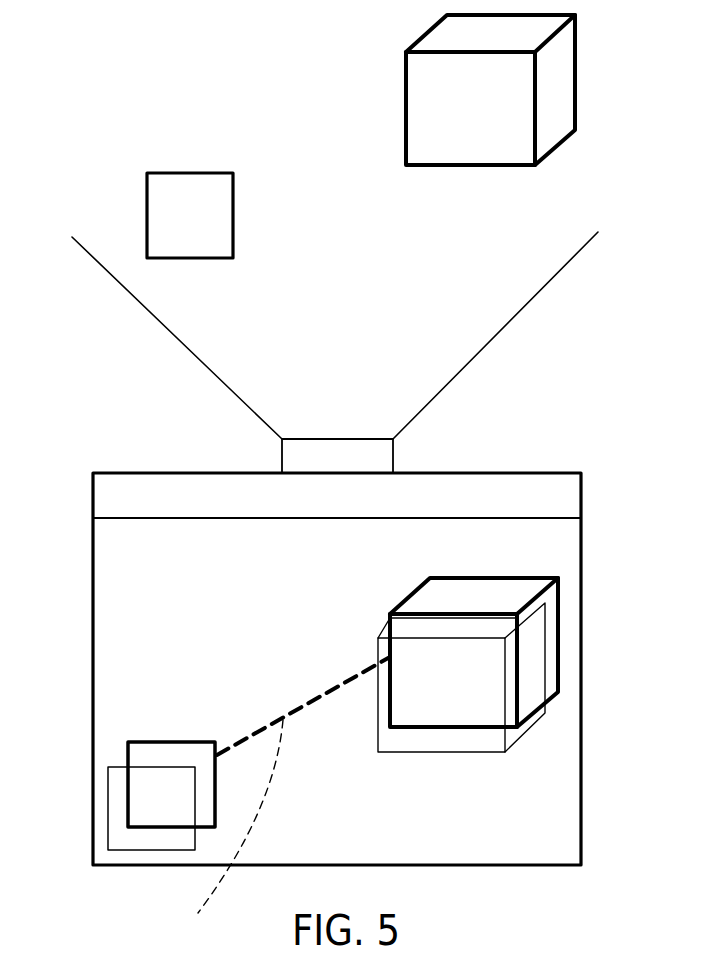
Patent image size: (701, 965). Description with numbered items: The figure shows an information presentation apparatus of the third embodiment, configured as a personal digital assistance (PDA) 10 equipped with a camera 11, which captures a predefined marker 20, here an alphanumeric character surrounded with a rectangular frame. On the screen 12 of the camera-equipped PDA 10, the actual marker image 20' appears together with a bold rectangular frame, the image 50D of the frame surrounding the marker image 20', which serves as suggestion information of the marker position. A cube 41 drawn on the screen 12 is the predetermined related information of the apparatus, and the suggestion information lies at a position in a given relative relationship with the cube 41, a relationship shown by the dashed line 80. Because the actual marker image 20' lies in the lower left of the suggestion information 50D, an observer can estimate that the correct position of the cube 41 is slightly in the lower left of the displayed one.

The personal digital assistance (PDA) 10 is at (94, 822).
The camera 11 is at (393, 452).
The screen 12 is at (565, 731).
The marker 20 is at (190, 191).
The marker image 20' is at (113, 808).
The cube 41 is at (558, 637).
The image of the frame 50D is at (128, 751).
The dashed line 80 is at (234, 833).